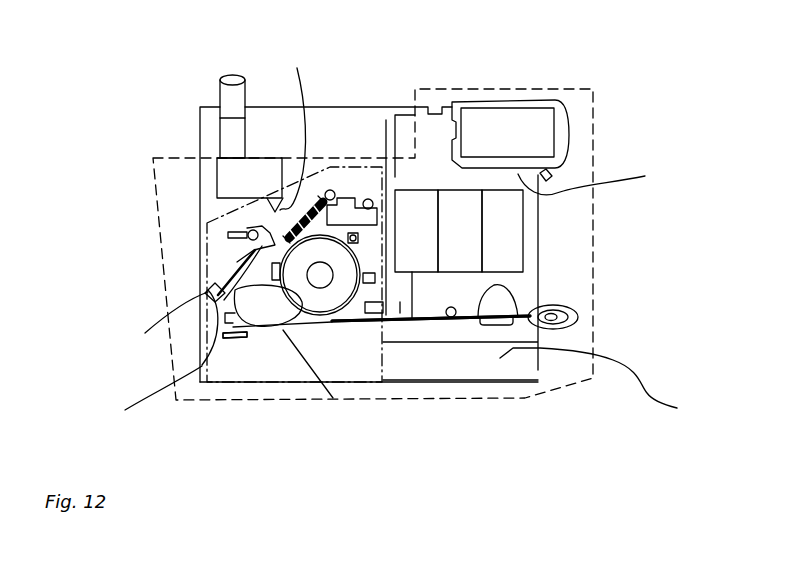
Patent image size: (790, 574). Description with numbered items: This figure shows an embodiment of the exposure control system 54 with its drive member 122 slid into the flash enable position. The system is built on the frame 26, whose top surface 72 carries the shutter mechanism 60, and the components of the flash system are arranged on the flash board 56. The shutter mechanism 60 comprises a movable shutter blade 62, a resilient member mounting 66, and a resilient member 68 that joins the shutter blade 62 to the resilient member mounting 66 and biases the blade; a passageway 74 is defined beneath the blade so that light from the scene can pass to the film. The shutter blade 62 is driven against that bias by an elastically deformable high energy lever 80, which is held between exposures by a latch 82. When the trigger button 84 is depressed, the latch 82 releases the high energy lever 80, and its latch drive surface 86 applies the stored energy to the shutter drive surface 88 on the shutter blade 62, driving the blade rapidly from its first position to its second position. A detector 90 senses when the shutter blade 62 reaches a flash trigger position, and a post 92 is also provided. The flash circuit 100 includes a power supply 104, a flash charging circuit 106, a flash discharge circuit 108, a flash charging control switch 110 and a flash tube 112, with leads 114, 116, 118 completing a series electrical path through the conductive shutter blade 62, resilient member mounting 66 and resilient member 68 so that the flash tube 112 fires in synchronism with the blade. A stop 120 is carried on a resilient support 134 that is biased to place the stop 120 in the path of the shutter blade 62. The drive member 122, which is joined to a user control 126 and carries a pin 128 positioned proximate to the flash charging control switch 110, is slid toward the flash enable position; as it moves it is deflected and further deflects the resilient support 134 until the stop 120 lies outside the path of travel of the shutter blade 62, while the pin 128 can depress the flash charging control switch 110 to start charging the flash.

The frame 26 is at (608, 388).
The exposure control system 54 is at (632, 88).
The flash board 56 is at (604, 182).
The shutter mechanism 60 is at (288, 388).
The shutter blade 62 is at (267, 295).
The resilient member mounting 66 is at (366, 199).
The resilient member 68 is at (325, 200).
The top surface 72 is at (340, 130).
The passageway 74 is at (329, 283).
The high energy lever 80 is at (240, 188).
The latch 82 is at (224, 145).
The trigger button 84 is at (224, 108).
The latch drive surface 86 is at (294, 129).
The shutter drive surface 88 is at (250, 211).
The detector 90 is at (154, 326).
The post 92 is at (144, 397).
The flash circuit 100 is at (538, 90).
The power supply 104 is at (490, 248).
The flash charging circuit 106 is at (447, 248).
The flash discharge circuit 108 is at (404, 248).
The flash charging control switch 110 is at (498, 303).
The flash tube 112 is at (521, 140).
The lead 114 is at (386, 120).
The lead 116 is at (412, 318).
The lead 118 is at (395, 318).
The stop 120 is at (230, 338).
The drive member 122 is at (438, 318).
The user control 126 is at (578, 318).
The pin 128 is at (455, 308).
The resilient support 134 is at (333, 398).